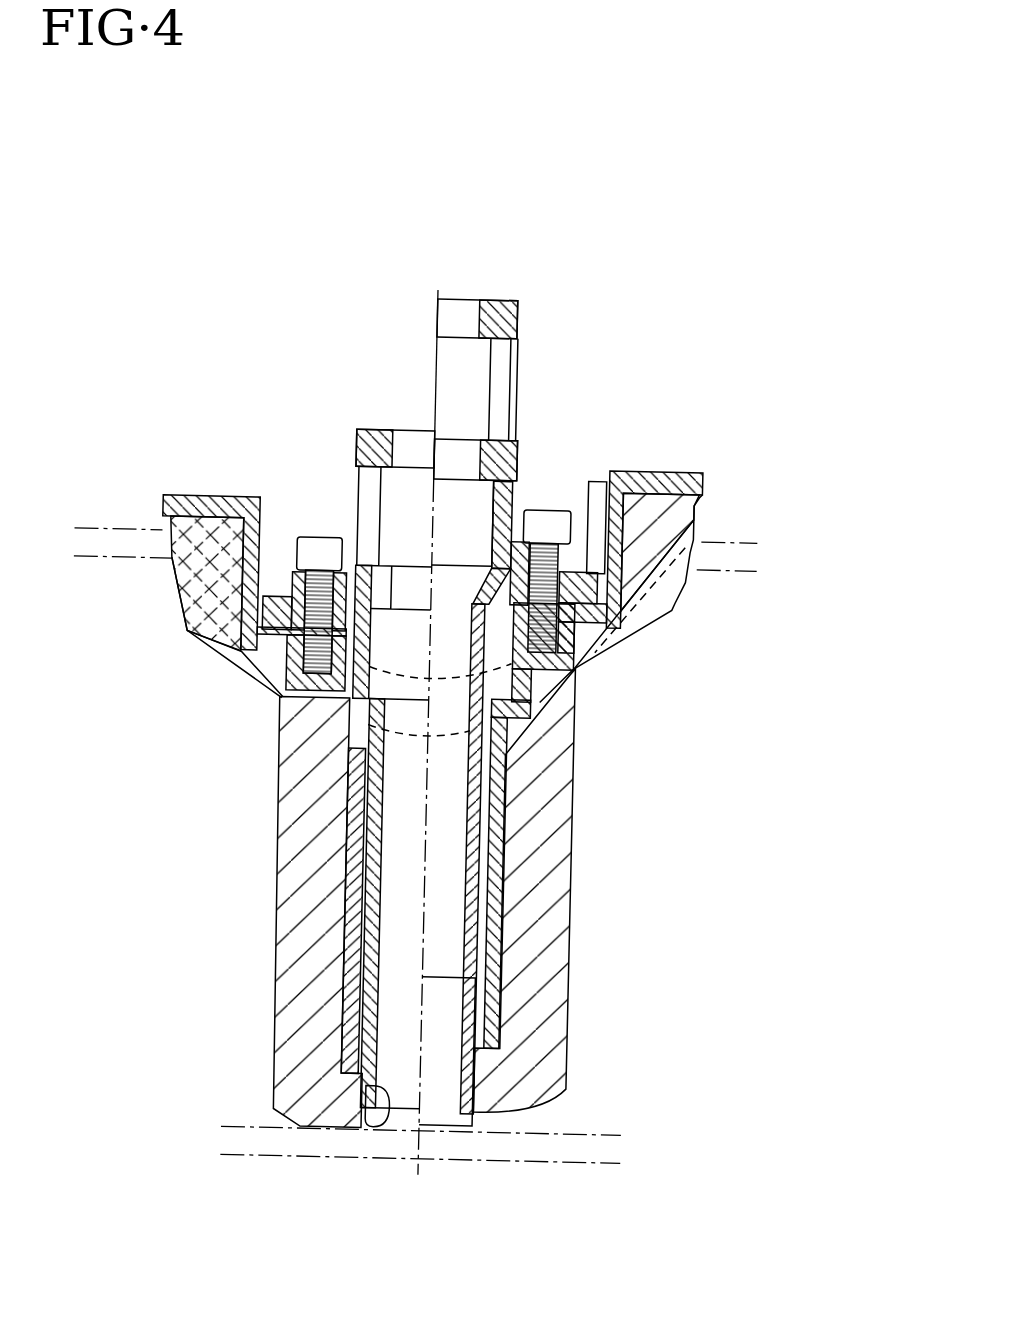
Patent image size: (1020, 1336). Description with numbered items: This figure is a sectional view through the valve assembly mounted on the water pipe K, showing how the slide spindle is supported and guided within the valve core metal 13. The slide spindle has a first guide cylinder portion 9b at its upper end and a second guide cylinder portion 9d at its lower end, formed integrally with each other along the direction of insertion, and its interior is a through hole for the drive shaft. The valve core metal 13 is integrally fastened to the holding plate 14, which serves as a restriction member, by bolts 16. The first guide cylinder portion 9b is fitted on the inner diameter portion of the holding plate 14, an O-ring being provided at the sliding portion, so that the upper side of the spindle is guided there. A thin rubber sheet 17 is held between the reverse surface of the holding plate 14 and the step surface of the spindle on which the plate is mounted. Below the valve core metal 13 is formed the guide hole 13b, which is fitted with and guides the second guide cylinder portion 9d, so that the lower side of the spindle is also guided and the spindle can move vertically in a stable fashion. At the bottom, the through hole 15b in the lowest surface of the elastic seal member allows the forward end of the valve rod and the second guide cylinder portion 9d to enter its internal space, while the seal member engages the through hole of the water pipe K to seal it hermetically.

The first guide cylinder portion 9b is at (513, 452).
The second guide cylinder portion 9d is at (390, 1108).
The valve core metal 13 is at (680, 472).
The guide hole 13b is at (345, 1000).
The holding plate 14 is at (590, 600).
The through hole 15b is at (468, 1100).
The bolts 16 is at (320, 536).
The thin rubber sheet 17 is at (280, 652).
The water pipe K is at (150, 565).